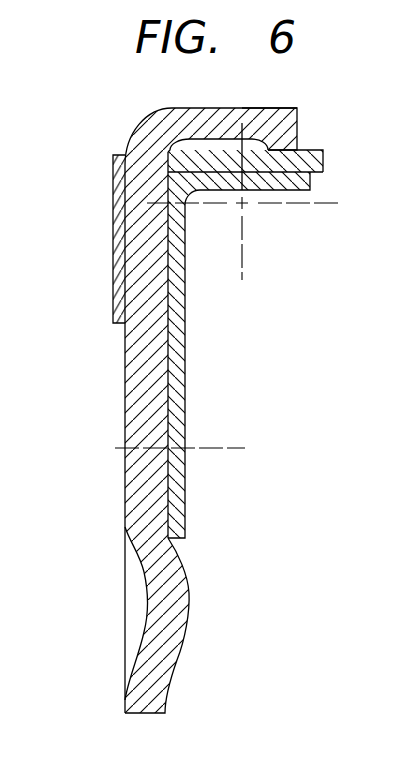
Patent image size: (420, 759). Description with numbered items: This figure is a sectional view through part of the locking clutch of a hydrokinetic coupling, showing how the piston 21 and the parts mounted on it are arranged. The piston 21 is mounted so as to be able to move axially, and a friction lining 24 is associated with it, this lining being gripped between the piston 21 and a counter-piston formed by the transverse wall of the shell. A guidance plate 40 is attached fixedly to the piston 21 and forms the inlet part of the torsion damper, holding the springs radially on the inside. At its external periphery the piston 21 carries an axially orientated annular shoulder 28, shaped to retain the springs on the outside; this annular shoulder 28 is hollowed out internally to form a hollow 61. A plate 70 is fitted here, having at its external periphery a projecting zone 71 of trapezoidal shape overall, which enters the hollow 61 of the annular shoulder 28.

The piston 21 is at (182, 607).
The friction lining 24 is at (112, 162).
The annular shoulder 28 is at (188, 121).
The guidance plate 40 is at (186, 367).
The hollow 61 is at (250, 135).
The plate 70 is at (323, 162).
The projecting zone 71 is at (268, 142).